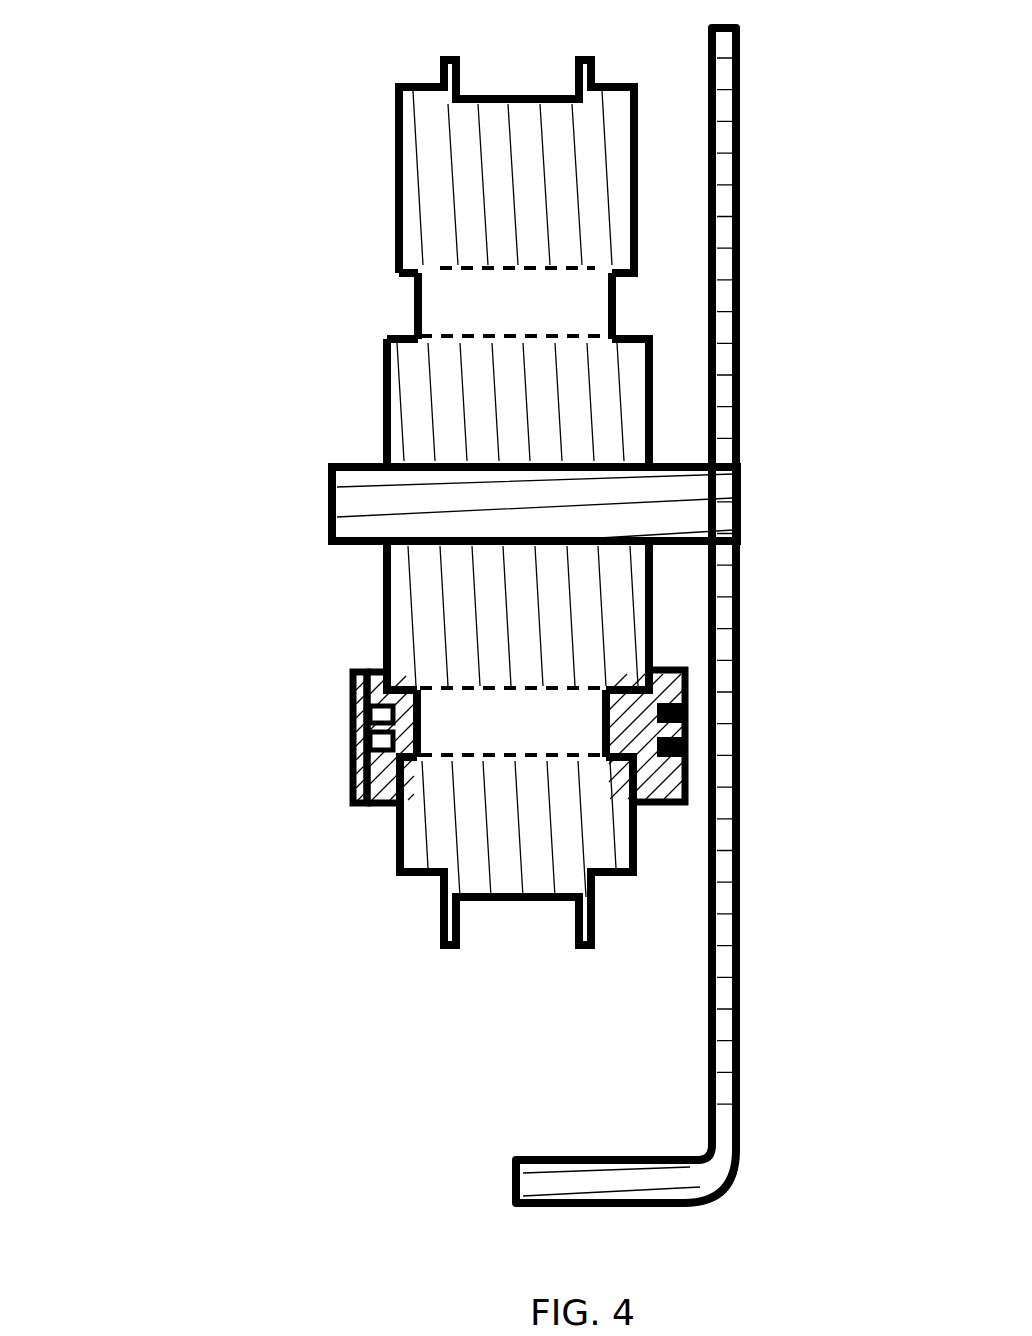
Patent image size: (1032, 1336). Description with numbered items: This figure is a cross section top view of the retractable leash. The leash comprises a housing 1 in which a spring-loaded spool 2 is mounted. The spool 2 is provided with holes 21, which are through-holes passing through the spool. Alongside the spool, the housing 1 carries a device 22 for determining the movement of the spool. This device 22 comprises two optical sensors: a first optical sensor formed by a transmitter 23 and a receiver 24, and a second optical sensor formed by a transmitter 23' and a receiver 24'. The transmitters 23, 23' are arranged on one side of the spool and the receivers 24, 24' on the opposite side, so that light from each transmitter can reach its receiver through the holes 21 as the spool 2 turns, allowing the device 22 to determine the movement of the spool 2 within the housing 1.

The housing 1 is at (722, 228).
The spring-loaded spool 2 is at (437, 147).
The holes 21 is at (457, 712).
The device for determining the movement of the spool 22 is at (507, 750).
The transmitter 23 is at (248, 750).
The transmitter 23' is at (224, 667).
The receiver 24 is at (757, 761).
The receiver 24' is at (795, 650).